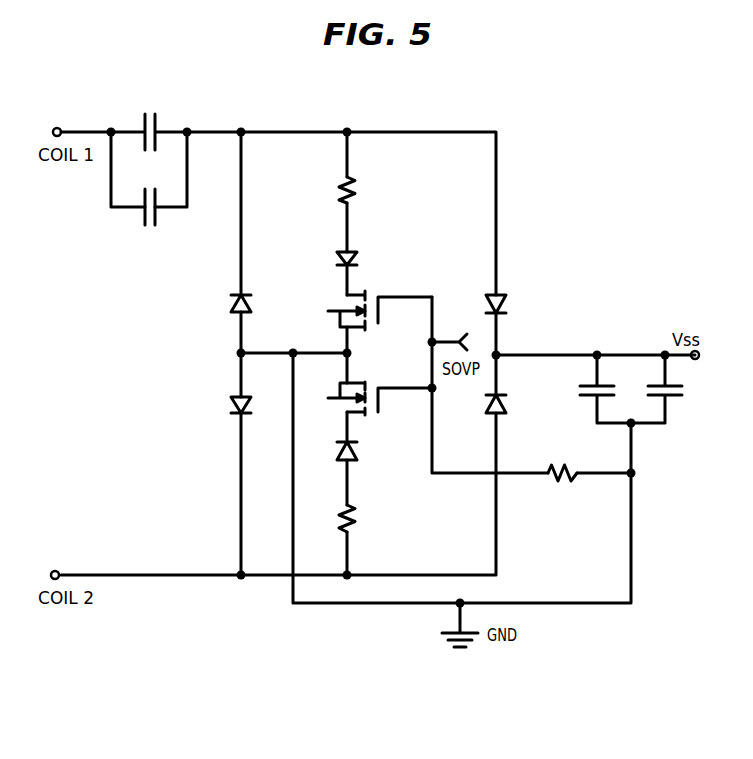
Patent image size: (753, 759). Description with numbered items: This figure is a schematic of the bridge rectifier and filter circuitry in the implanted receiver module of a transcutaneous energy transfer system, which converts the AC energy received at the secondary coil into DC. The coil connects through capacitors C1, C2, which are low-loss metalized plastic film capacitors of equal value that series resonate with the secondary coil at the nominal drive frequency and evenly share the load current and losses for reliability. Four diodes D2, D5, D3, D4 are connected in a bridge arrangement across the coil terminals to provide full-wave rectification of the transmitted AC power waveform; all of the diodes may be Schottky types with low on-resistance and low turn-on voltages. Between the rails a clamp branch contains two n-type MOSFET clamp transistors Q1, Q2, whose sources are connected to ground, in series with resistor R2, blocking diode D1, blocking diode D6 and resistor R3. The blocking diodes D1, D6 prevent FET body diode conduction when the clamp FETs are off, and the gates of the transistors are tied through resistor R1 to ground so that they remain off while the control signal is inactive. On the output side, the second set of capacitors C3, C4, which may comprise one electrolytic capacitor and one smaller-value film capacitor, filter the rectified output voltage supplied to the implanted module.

The capacitor C1 is at (149, 129).
The capacitor C2 is at (163, 213).
The diode D2 is at (228, 304).
The diode D5 is at (228, 405).
The resistor R2 is at (360, 191).
The blocking diode D1 is at (359, 258).
The clamp FET Q1 is at (368, 310).
The clamp FET Q2 is at (368, 398).
The blocking diode D6 is at (359, 452).
The resistor R3 is at (360, 518).
The diode D3 is at (508, 304).
The diode D4 is at (508, 404).
The capacitor C3 is at (599, 389).
The capacitor C4 is at (661, 389).
The resistor R1 is at (562, 489).